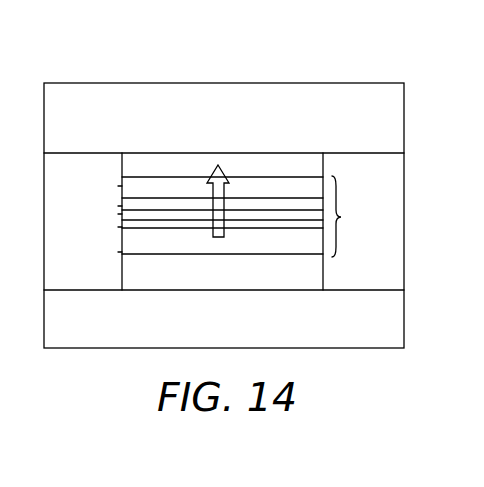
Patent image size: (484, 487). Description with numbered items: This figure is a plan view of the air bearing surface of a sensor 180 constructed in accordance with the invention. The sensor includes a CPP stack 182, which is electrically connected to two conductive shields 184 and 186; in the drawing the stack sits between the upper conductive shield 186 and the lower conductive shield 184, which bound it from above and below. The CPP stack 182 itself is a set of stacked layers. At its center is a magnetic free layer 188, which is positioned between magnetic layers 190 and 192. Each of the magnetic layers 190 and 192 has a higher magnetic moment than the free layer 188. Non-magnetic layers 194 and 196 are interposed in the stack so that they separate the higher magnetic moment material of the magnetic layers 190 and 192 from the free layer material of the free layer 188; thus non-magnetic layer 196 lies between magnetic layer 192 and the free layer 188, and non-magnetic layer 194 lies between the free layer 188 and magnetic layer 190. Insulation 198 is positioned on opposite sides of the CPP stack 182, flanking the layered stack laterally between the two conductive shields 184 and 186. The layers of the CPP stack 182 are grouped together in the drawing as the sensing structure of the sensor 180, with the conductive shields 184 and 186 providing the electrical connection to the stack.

The sensor 180 is at (337, 72).
The CPP stack 182 is at (252, 216).
The conductive shield 184 is at (65, 340).
The conductive shield 186 is at (230, 98).
The magnetic free layer 188 is at (122, 213).
The magnetic layer 190 is at (122, 252).
The magnetic layer 192 is at (122, 186).
The non-magnetic layer 194 is at (122, 227).
The non-magnetic layer 196 is at (122, 206).
The insulation 198 is at (108, 283).